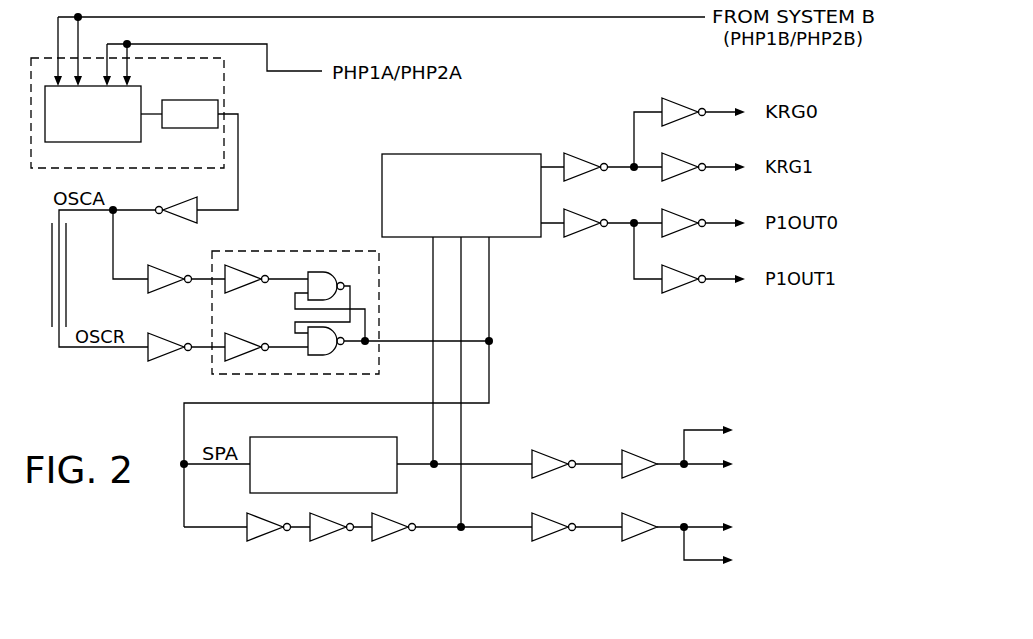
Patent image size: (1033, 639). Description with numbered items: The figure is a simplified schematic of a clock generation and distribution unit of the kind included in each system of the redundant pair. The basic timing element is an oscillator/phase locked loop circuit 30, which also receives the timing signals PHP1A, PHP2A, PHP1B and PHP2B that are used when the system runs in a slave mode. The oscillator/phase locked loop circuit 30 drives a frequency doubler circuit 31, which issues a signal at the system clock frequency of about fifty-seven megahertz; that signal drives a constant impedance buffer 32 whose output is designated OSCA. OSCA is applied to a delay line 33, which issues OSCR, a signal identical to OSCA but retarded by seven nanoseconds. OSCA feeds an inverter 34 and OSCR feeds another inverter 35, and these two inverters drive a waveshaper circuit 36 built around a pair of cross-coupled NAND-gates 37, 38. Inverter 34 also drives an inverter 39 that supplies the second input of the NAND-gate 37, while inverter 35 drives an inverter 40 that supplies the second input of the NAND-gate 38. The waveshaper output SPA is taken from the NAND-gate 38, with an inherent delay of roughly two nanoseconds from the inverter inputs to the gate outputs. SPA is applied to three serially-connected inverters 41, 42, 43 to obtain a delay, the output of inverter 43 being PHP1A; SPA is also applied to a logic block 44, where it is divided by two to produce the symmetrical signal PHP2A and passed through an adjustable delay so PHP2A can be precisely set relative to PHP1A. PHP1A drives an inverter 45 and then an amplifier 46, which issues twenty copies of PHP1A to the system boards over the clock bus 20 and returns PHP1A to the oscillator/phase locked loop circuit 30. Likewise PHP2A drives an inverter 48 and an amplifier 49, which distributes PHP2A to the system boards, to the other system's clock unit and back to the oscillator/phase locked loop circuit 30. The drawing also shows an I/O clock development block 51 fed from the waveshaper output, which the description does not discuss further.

The clock bus 20 is at (767, 496).
The oscillator/phase locked loop circuit 30 is at (91, 142).
The frequency doubler circuit 31 is at (193, 100).
The constant impedance buffer 32 is at (185, 197).
The delay line 33 is at (68, 268).
The inverter 34 is at (168, 272).
The inverter 35 is at (168, 342).
The waveshaper circuit 36 is at (302, 251).
The NAND-gate 37 is at (331, 272).
The NAND-gate 38 is at (331, 355).
The inverter 39 is at (242, 289).
The inverter 40 is at (243, 337).
The inverter 41 is at (258, 540).
The inverter 42 is at (322, 537).
The inverter 43 is at (385, 536).
The logic block 44 is at (344, 437).
The inverter 45 is at (548, 538).
The amplifier 46 is at (635, 541).
The inverter 48 is at (553, 455).
The amplifier 49 is at (630, 452).
The I/O clock development circuit 51 is at (424, 154).